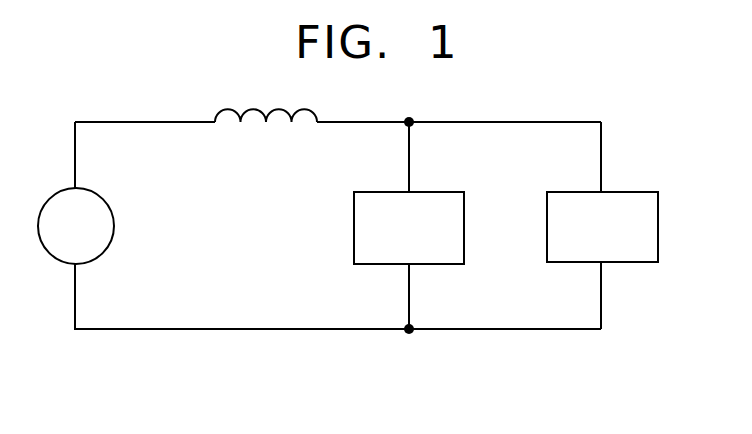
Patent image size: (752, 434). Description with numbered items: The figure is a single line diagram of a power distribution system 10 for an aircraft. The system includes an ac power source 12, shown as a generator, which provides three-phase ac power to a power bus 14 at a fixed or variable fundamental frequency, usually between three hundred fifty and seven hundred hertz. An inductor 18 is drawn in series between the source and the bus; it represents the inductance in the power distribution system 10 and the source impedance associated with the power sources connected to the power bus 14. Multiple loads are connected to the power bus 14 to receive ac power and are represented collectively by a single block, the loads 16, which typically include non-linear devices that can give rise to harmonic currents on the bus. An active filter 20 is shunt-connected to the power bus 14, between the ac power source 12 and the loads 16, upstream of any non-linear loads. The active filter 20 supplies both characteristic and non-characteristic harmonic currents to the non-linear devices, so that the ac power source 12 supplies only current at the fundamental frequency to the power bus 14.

The power distribution system 10 is at (585, 365).
The ac power source 12 is at (102, 254).
The power bus 14 is at (528, 122).
The loads 16 is at (626, 192).
The inductor 18 is at (302, 112).
The active filter 20 is at (430, 191).